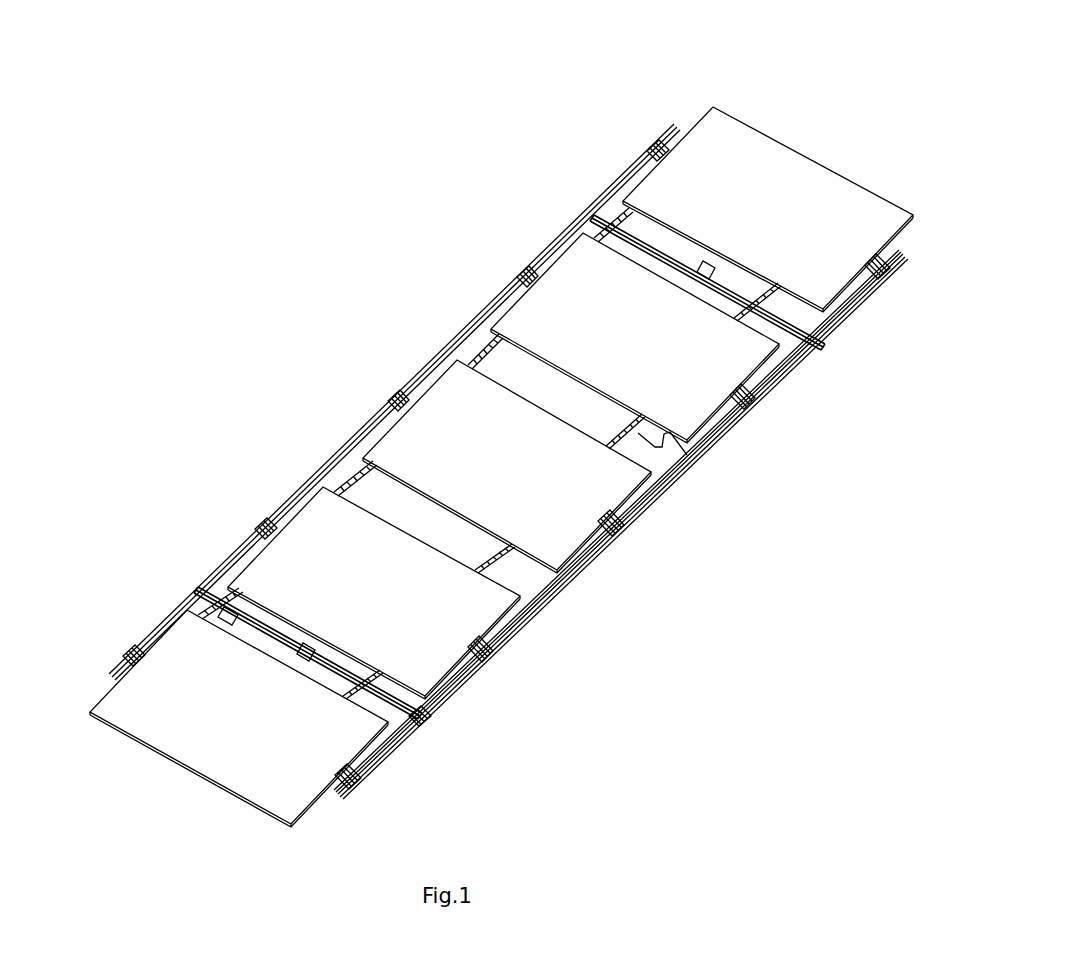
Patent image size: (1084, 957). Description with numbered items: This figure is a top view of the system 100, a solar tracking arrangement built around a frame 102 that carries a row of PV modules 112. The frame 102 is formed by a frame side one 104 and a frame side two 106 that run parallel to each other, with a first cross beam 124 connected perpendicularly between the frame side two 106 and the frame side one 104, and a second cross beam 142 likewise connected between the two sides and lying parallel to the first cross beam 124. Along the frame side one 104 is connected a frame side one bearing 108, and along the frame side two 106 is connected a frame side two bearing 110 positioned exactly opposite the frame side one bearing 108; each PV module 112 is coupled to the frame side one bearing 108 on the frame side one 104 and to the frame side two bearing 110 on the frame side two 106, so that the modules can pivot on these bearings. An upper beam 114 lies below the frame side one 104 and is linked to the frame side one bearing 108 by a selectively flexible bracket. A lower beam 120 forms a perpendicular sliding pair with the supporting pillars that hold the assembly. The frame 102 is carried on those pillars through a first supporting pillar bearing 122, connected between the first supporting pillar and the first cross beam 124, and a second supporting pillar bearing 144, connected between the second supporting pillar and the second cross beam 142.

The system 100 is at (500, 438).
The frame 102 is at (525, 447).
The frame side one 104 is at (343, 455).
The frame side two 106 is at (557, 593).
The frame side one bearing 108 is at (660, 147).
The frame side two bearing 110 is at (887, 272).
The PV module 112 is at (834, 253).
The upper beam 114 is at (478, 352).
The lower beam 120 is at (672, 433).
The first supporting pillar bearing 122 is at (305, 662).
The first cross beam 124 is at (227, 620).
The second cross beam 142 is at (601, 216).
The second supporting pillar bearing 144 is at (706, 272).